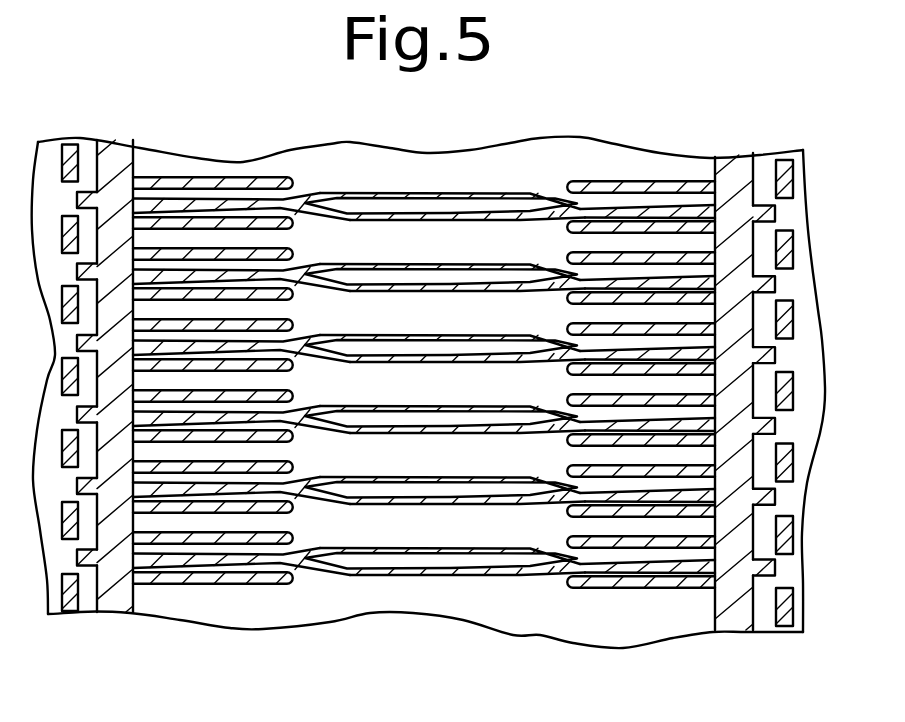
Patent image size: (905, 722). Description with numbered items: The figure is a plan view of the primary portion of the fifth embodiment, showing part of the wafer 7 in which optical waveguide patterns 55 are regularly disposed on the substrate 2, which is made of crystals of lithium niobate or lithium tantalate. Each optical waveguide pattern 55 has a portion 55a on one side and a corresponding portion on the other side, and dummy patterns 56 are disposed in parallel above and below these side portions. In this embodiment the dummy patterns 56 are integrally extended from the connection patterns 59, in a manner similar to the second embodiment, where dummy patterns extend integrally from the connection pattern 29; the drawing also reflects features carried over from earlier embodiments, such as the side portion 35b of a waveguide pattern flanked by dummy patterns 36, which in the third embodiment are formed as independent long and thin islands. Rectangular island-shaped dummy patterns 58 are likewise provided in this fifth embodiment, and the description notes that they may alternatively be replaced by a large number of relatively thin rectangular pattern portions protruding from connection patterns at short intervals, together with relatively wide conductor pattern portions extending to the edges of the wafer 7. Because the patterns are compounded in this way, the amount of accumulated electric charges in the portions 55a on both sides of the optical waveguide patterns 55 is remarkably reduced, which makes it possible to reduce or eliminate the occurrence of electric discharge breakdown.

The substrate 2 is at (368, 605).
The wafer 7 is at (812, 168).
The connection pattern 29 is at (730, 617).
The side portion 35b is at (665, 568).
The dummy patterns 36 is at (620, 545).
The optical waveguide patterns 55 is at (445, 407).
The side portion 55a is at (243, 562).
The dummy patterns 56 is at (203, 537).
The rectangular island-shaped dummy patterns 58 is at (60, 592).
The connection patterns 59 is at (110, 597).